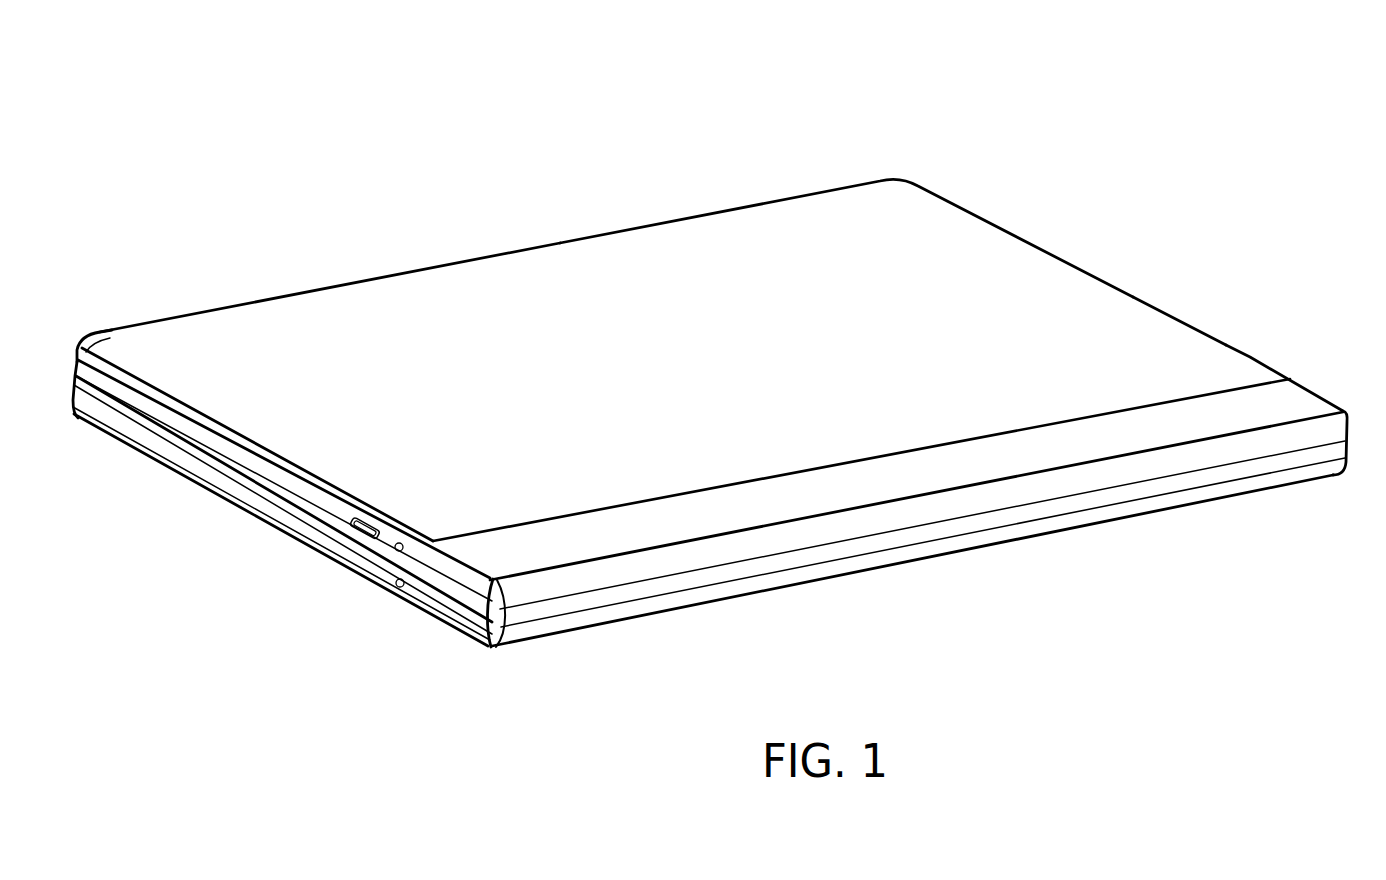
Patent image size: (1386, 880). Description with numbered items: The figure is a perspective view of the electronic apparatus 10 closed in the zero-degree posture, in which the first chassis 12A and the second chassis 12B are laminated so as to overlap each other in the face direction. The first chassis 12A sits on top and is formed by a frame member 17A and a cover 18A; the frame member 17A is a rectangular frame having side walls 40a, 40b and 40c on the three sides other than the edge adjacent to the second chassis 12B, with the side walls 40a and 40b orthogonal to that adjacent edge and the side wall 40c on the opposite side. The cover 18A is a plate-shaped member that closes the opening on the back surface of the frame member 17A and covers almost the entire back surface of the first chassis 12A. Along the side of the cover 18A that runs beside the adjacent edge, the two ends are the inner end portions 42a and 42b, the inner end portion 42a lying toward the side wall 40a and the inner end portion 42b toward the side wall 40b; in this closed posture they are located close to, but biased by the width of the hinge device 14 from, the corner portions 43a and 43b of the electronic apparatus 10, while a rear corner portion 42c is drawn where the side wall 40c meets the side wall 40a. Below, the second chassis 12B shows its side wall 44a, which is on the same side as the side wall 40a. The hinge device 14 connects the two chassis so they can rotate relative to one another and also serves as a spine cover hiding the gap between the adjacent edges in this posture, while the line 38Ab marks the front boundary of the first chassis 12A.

The electronic apparatus 10 is at (1318, 144).
The first chassis 12A is at (589, 272).
The second chassis 12B is at (231, 502).
The hinge device 14 is at (648, 582).
The frame member 17A is at (663, 516).
The cover 18A is at (437, 300).
The edge of front portion 38Ab is at (1040, 468).
The side wall 40a is at (218, 432).
The side wall 40b is at (1133, 293).
The side wall 40c is at (325, 288).
The inner end portion 42a is at (432, 512).
The inner end portion 42b is at (1226, 366).
The rear-left corner portion 42c is at (118, 344).
The corner portion 43a is at (518, 568).
The corner portion 43b is at (1323, 410).
The side wall 44a is at (139, 436).